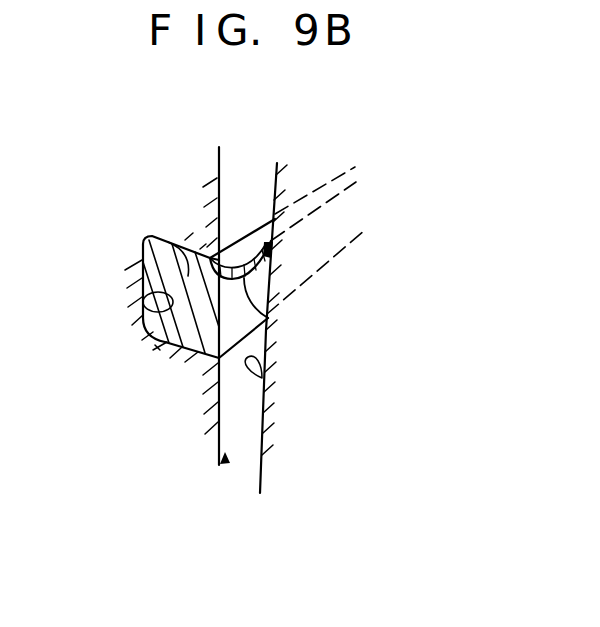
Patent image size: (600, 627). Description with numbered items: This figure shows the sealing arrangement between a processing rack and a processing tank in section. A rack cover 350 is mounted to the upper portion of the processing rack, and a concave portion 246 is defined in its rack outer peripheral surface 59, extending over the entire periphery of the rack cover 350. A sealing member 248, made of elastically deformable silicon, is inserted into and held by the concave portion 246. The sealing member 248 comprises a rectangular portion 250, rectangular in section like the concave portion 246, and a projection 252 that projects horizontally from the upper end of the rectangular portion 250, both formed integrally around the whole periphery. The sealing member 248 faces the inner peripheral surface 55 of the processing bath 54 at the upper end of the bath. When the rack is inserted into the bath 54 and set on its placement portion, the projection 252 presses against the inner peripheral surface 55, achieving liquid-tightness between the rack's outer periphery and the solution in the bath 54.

The rectangular portion 250 is at (170, 238).
The concave portion 246 is at (145, 313).
The sealing member 248 is at (158, 347).
The projection 252 is at (268, 318).
The inner peripheral surface 55 is at (262, 378).
The rack outer peripheral surface 59 is at (219, 398).
The rack cover 350 is at (226, 457).
The processing bath 54 is at (256, 468).